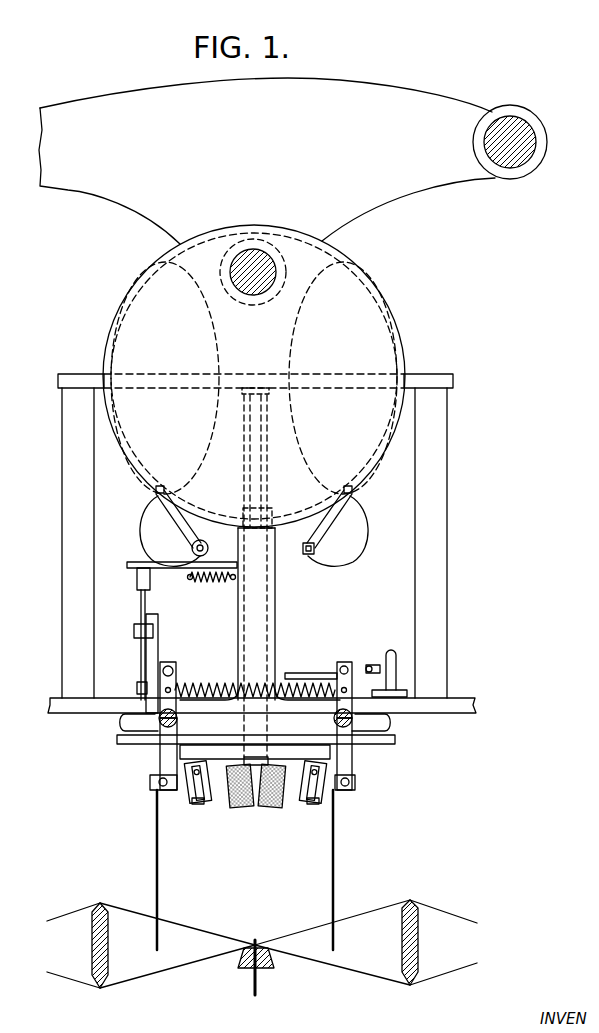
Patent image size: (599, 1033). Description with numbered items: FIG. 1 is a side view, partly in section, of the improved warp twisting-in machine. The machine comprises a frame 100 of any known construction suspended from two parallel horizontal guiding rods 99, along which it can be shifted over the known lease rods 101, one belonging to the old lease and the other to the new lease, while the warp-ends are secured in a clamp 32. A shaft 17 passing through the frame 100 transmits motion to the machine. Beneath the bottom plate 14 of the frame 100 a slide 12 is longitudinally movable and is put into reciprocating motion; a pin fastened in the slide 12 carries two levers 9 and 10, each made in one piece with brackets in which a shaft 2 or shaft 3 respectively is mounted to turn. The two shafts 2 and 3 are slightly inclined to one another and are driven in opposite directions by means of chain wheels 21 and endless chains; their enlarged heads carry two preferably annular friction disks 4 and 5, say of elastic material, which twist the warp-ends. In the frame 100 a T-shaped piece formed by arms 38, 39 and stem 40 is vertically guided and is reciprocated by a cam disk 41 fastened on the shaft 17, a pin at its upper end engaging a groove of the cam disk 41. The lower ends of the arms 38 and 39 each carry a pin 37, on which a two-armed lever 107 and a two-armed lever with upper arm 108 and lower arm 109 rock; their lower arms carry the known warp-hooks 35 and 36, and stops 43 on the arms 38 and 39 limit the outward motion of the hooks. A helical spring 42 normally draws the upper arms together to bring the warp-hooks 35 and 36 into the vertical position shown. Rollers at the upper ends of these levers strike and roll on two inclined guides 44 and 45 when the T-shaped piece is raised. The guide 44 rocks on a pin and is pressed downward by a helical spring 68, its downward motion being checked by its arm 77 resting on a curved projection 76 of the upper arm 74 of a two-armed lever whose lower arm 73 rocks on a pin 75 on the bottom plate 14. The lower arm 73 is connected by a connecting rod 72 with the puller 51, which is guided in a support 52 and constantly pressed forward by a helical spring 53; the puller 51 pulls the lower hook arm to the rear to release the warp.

The frame 100 is at (50, 515).
The guiding rod 99 is at (510, 135).
The shaft 17 is at (240, 268).
The cam disk 41 is at (132, 470).
The stem of T-shaped piece 40 is at (240, 603).
The inclined guide 44 is at (160, 526).
The inclined guide 45 is at (330, 522).
The arm of guide 77 is at (130, 564).
The helical spring 68 is at (207, 580).
The curved projection 76 is at (138, 583).
The upper arm of two-armed lever 74 is at (141, 605).
The pin 75 is at (134, 630).
The lower arm of two-armed lever 73 is at (146, 652).
The connecting rod 72 is at (138, 688).
The two-armed lever 107 is at (176, 680).
The lever 9 is at (165, 760).
The helical spring 42 is at (205, 690).
The upper arm of right two-armed lever 108 is at (340, 664).
The puller 51 is at (310, 674).
The helical spring 53 is at (370, 665).
The support 52 is at (392, 650).
The bottom plate 14 is at (436, 706).
The pin 37 is at (140, 719).
The stop 43 is at (178, 720).
The slide 12 is at (392, 744).
The arm of T-shaped piece 39 is at (332, 753).
The arm of T-shaped piece 38 is at (178, 740).
The lever 10 is at (330, 770).
The lower arm of right two-armed lever 109 is at (345, 772).
The shaft 2 is at (198, 800).
The friction disk 4 is at (240, 806).
The friction disk 5 is at (272, 806).
The shaft 3 is at (313, 800).
The chain wheel 21 is at (199, 806).
The warp-hook 35 is at (155, 874).
The warp-hook 36 is at (335, 874).
The lease rod 101 is at (93, 945).
The clamp 32 is at (246, 968).